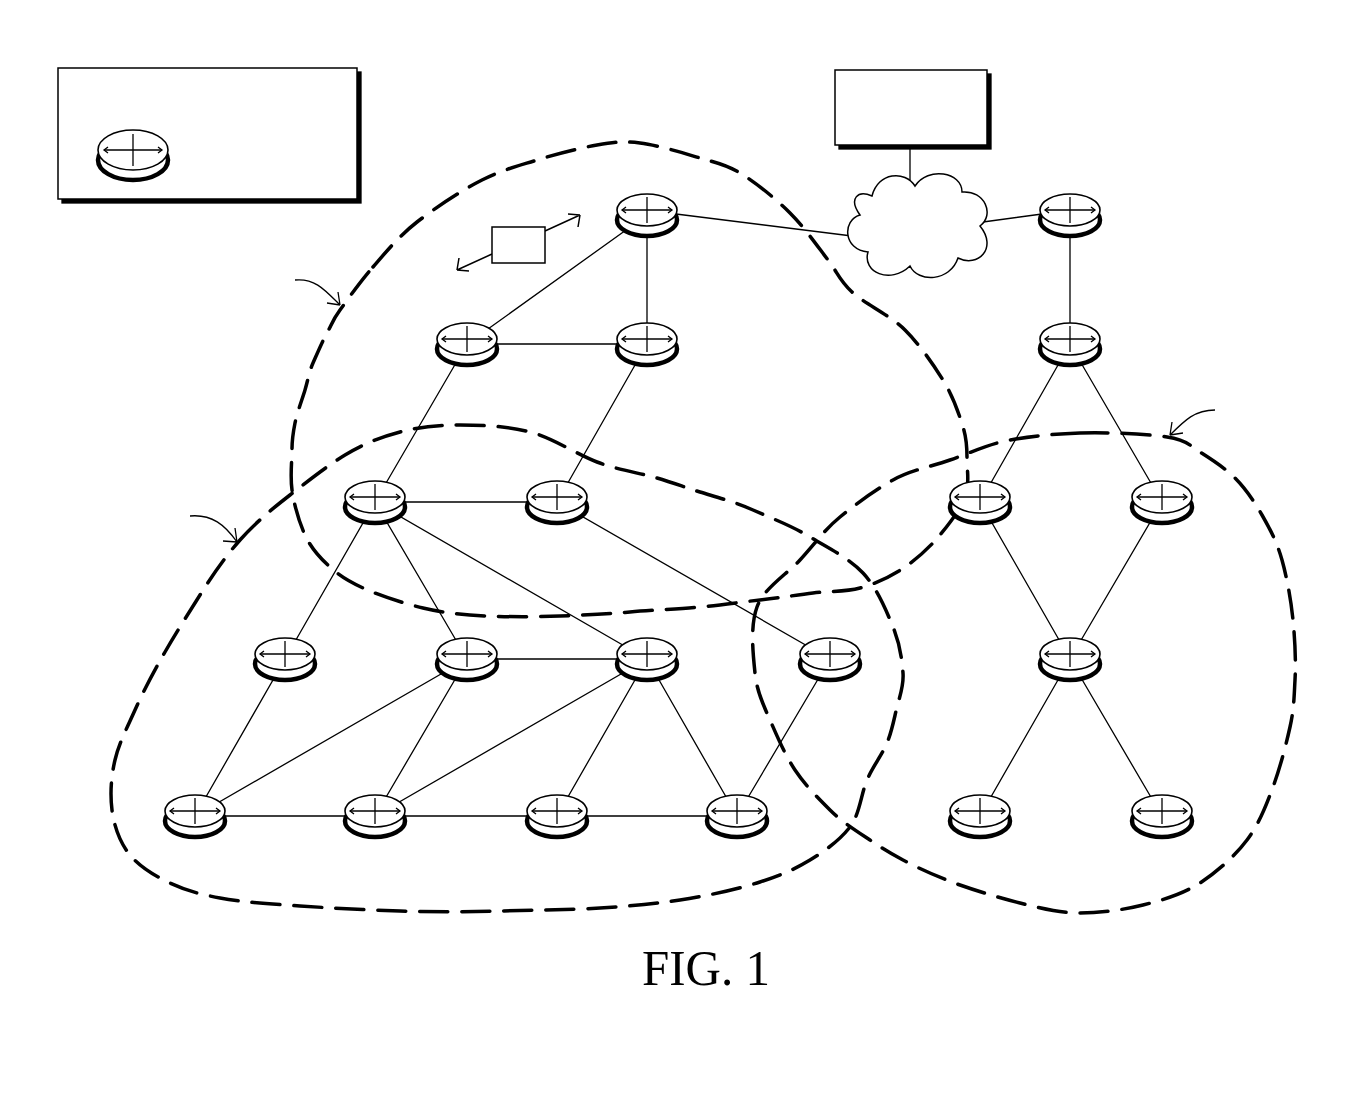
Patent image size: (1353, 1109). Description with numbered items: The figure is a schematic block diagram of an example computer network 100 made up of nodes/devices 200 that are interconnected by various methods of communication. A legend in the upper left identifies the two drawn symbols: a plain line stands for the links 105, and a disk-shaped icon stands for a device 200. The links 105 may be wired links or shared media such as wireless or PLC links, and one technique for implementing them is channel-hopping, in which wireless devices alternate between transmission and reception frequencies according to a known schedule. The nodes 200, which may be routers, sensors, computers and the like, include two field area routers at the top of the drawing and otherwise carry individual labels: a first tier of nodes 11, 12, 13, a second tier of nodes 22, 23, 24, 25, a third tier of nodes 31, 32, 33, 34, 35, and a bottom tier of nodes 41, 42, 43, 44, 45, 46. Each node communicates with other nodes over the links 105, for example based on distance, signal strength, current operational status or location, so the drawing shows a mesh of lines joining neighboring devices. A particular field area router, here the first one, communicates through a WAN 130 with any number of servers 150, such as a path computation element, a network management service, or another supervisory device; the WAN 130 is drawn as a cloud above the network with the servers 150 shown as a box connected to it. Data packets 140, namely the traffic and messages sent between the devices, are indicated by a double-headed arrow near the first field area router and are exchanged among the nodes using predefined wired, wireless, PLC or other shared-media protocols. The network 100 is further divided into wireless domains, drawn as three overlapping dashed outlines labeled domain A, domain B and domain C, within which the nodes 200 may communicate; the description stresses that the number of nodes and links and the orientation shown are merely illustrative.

The computer network 100 is at (1256, 129).
The links 105 is at (86, 101).
The nodes/devices 200 is at (218, 155).
The servers 150 is at (893, 132).
The WAN 130 is at (897, 252).
The data packets 140 is at (501, 257).
The node 11 is at (467, 361).
The node 12 is at (647, 361).
The node 13 is at (1070, 361).
The node 22 is at (375, 520).
The node 23 is at (557, 520).
The node 24 is at (980, 520).
The node 25 is at (1162, 520).
The node 31 is at (285, 677).
The node 32 is at (467, 677).
The node 33 is at (647, 677).
The node 34 is at (830, 677).
The node 35 is at (1070, 677).
The node 41 is at (195, 833).
The node 42 is at (375, 833).
The node 43 is at (557, 833).
The node 44 is at (737, 833).
The node 45 is at (980, 833).
The node 46 is at (1162, 833).